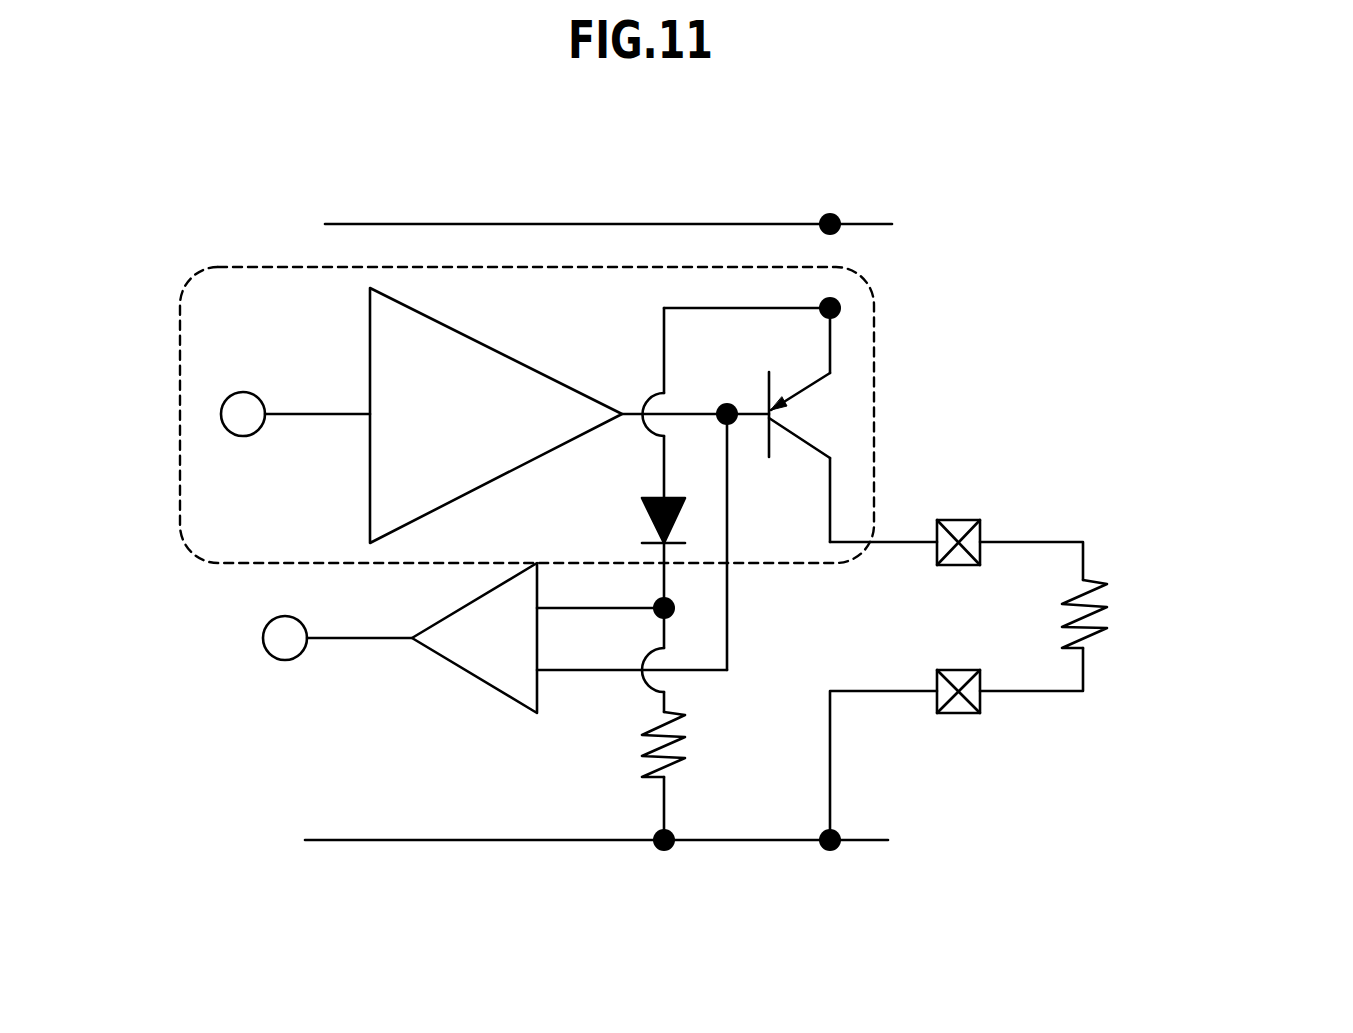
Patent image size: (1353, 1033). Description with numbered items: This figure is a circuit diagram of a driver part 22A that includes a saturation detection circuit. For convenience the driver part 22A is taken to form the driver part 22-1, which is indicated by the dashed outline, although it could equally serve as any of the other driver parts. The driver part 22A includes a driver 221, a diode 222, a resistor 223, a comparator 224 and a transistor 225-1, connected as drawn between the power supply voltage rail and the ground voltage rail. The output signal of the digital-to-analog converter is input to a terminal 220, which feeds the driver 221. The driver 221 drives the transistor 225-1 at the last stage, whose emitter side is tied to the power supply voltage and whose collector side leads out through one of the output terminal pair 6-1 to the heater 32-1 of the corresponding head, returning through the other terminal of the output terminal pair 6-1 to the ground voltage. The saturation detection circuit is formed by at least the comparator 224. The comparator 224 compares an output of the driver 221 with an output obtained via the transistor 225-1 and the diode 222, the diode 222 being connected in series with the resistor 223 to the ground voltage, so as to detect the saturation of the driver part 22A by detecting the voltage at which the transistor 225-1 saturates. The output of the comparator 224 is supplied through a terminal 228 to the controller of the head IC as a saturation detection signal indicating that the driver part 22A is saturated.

The driver part 22A is at (252, 164).
The driver part 22-1 is at (876, 338).
The terminal 220 is at (250, 392).
The driver 221 is at (477, 338).
The diode 222 is at (643, 513).
The resistor 223 is at (678, 752).
The comparator 224 is at (540, 695).
The transistor 225-1 is at (762, 395).
The terminal 228 is at (290, 660).
The output terminal pair 6-1 is at (958, 520).
The heater 32-1 is at (1095, 625).